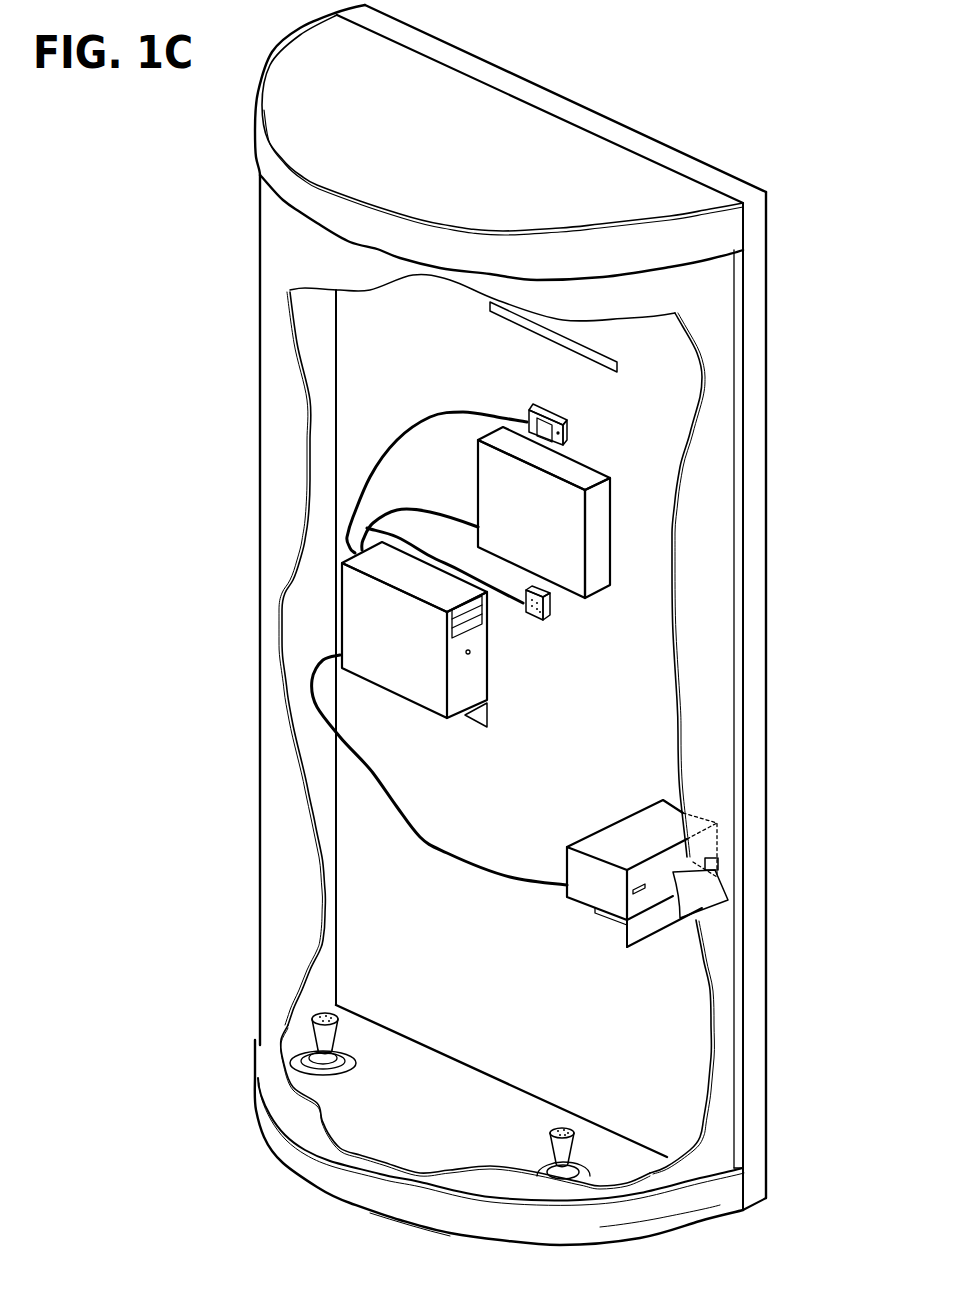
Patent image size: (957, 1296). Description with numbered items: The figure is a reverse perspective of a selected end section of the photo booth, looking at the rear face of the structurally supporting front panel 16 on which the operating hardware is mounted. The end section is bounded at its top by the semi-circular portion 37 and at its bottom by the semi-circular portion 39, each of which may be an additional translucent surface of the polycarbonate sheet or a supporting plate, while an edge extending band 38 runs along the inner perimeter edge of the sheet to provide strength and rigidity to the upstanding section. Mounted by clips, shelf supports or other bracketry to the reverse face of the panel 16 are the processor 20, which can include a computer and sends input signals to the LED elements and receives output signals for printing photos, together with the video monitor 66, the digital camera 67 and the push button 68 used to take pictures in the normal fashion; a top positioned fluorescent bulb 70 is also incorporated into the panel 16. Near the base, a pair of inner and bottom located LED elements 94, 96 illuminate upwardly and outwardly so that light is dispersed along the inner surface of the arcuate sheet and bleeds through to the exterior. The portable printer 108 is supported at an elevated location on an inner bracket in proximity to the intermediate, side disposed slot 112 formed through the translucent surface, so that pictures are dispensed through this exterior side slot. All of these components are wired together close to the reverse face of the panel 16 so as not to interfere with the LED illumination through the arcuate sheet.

The front panel 16 is at (624, 769).
The processor control 20 is at (400, 678).
The top semi-circular portion 37 is at (471, 149).
The edge extending band 38 is at (515, 90).
The bottom semi-circular portion 39 is at (407, 1148).
The video monitor 66 is at (560, 527).
The camera 67 is at (567, 442).
The push button 68 is at (535, 622).
The fluorescent bulb 70 is at (542, 332).
The LED element 94 is at (577, 1142).
The LED element 96 is at (318, 1032).
The portable printer 108 is at (620, 833).
The side accessible slot 112 is at (707, 860).